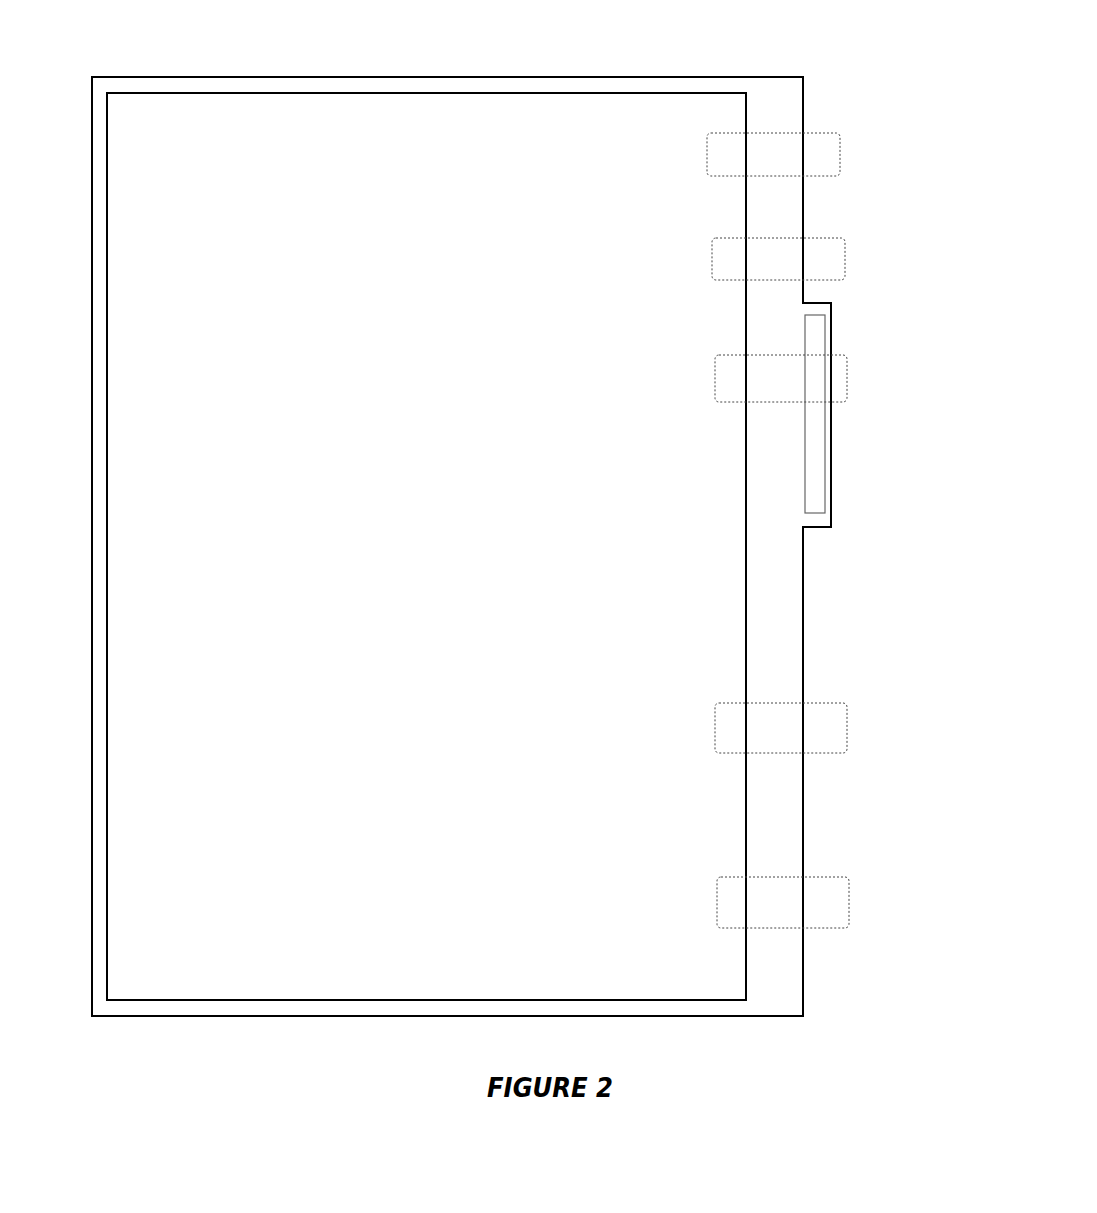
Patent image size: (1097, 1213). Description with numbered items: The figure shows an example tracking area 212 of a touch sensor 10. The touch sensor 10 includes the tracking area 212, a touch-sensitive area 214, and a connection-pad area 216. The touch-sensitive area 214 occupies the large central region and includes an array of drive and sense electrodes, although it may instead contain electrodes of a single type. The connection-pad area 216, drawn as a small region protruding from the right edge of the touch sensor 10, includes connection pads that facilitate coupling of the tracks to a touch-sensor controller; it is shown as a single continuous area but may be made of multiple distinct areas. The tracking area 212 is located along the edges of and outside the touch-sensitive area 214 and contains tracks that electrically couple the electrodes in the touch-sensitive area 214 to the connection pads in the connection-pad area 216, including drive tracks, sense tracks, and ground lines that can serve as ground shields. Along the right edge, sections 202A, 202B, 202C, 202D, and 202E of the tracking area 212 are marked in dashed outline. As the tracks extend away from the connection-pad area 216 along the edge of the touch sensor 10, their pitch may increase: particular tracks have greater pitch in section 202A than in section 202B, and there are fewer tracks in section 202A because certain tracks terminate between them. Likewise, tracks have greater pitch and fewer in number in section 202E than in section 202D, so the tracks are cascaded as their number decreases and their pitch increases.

The touch sensor 10 is at (777, 60).
The tracking area 212 is at (334, 76).
The touch-sensitive area 214 is at (434, 114).
The connection-pad area 216 is at (817, 346).
The section of tracking area 202A is at (707, 155).
The section of tracking area 202B is at (713, 266).
The section of tracking area 202C is at (716, 383).
The section of tracking area 202D is at (717, 733).
The section of tracking area 202E is at (721, 901).